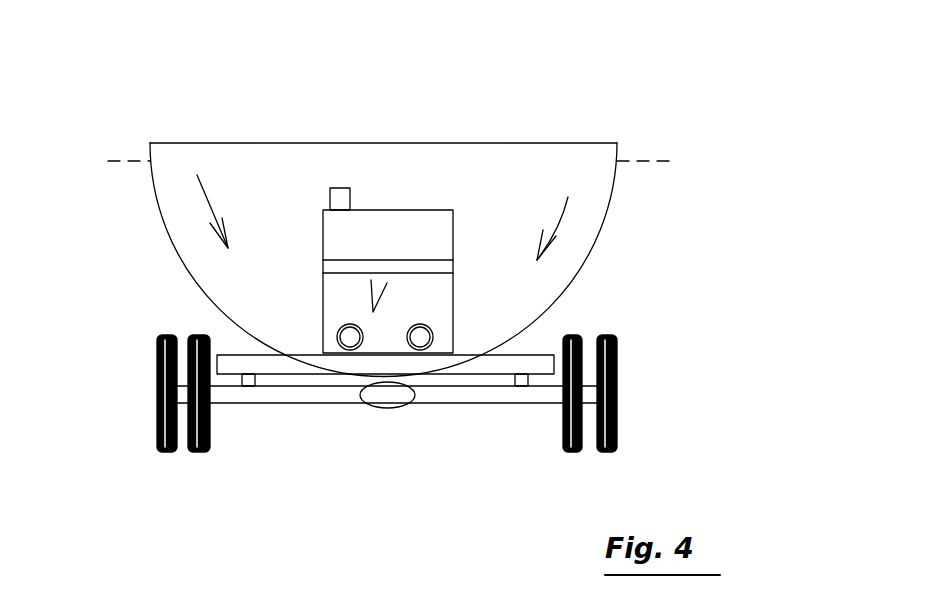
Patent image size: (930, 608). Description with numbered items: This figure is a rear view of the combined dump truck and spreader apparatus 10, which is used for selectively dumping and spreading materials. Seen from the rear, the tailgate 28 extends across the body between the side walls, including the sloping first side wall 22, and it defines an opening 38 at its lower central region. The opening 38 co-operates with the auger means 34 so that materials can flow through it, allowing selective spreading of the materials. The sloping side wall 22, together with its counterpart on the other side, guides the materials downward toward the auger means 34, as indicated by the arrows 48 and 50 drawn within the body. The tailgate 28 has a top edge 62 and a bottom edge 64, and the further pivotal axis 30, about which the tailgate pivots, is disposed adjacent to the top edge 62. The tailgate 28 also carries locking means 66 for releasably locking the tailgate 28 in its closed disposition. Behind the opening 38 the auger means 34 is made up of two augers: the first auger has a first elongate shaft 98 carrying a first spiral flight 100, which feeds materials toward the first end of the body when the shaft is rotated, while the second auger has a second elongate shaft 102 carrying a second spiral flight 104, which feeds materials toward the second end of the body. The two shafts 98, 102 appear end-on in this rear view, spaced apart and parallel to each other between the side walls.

The combined dump truck and spreader apparatus 10 is at (428, 127).
The first side wall 22 is at (600, 240).
The tailgate 28 is at (520, 283).
The further pivotal axis 30 is at (643, 159).
The auger means 34 is at (373, 312).
The opening 38 is at (455, 317).
The arrow 48 is at (208, 222).
The arrow 50 is at (557, 210).
The top edge 62 is at (165, 142).
The bottom edge 64 is at (443, 353).
The locking means 66 is at (330, 188).
The first elongate shaft 98 is at (350, 340).
The first spiral flight 100 is at (338, 345).
The second elongate shaft 102 is at (420, 340).
The second spiral flight 104 is at (421, 350).